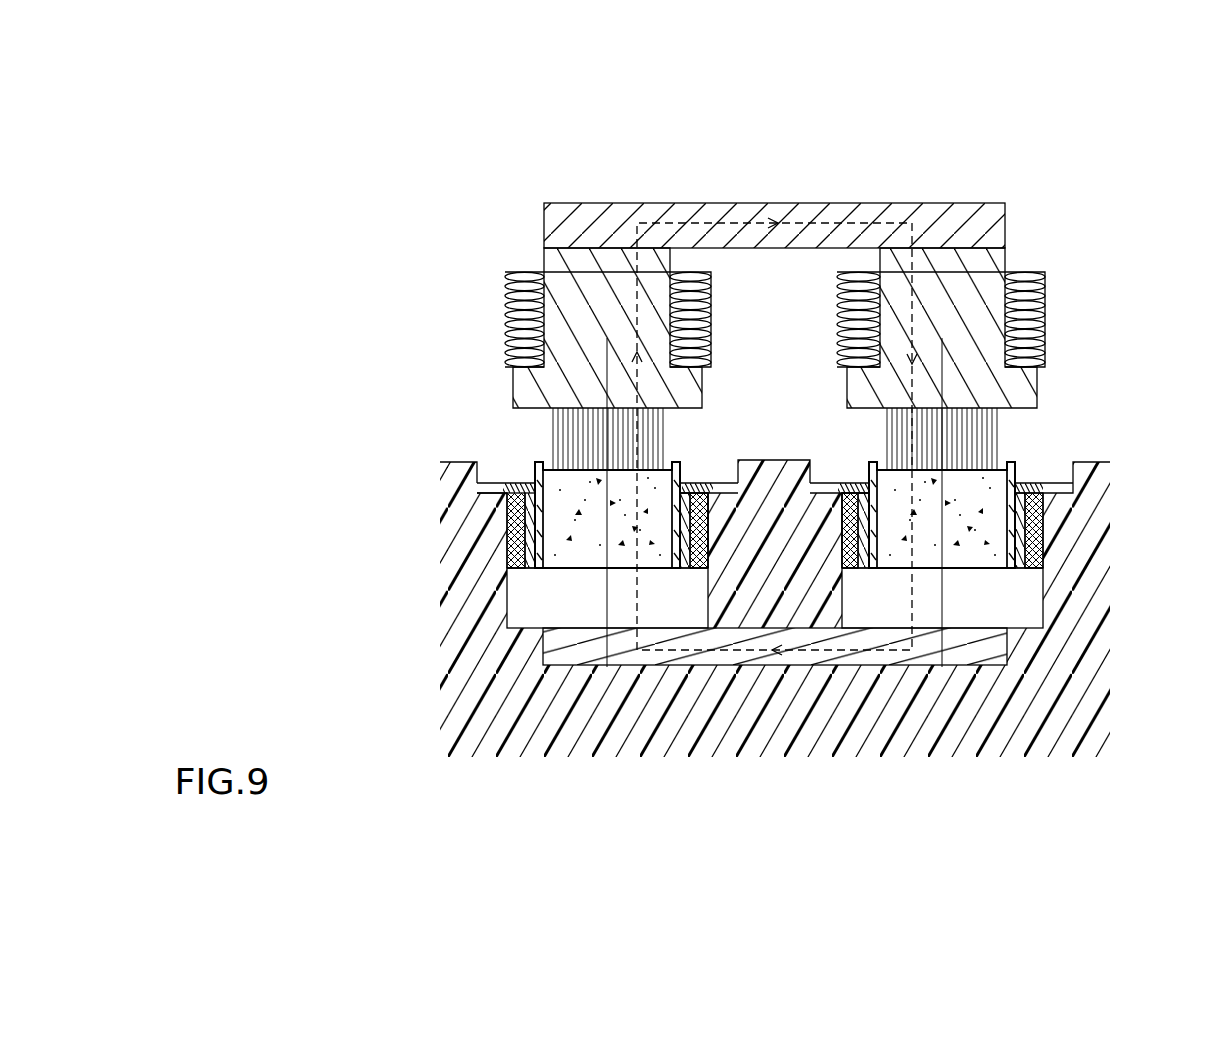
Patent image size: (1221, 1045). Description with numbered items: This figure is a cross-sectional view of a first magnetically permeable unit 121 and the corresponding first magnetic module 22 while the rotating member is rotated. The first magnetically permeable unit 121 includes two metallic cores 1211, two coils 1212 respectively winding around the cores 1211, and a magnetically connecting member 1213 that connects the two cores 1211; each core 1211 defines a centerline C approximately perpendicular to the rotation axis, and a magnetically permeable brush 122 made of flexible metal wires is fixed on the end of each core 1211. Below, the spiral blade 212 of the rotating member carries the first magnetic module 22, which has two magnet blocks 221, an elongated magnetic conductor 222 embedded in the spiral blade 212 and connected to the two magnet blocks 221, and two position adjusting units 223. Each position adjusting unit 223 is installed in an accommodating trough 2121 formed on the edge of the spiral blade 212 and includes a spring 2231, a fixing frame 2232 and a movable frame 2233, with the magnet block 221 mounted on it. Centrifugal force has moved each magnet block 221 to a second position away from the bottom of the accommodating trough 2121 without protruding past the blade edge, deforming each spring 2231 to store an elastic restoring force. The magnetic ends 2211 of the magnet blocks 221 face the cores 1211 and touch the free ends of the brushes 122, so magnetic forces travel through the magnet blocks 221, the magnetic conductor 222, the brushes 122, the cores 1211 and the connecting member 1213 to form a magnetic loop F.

The first magnetically permeable unit 121 is at (527, 97).
The metallic core 1211 is at (645, 305).
The coil 1212 is at (517, 288).
The magnetically connecting member 1213 is at (771, 214).
The magnetic loop F is at (727, 232).
The centerline C is at (942, 388).
The magnetically permeable brush 122 is at (538, 426).
The accommodating trough 2121 is at (838, 470).
The first magnetic module 22 is at (300, 427).
The magnet block 221 is at (657, 498).
The magnetic end 2211 is at (568, 466).
The position adjusting unit 223 is at (488, 537).
The magnetic conductor 222 is at (553, 653).
The spiral blade 212 is at (1080, 727).
The spring 2231 is at (1030, 540).
The fixing frame 2232 is at (1043, 513).
The movable frame 2233 is at (1040, 562).